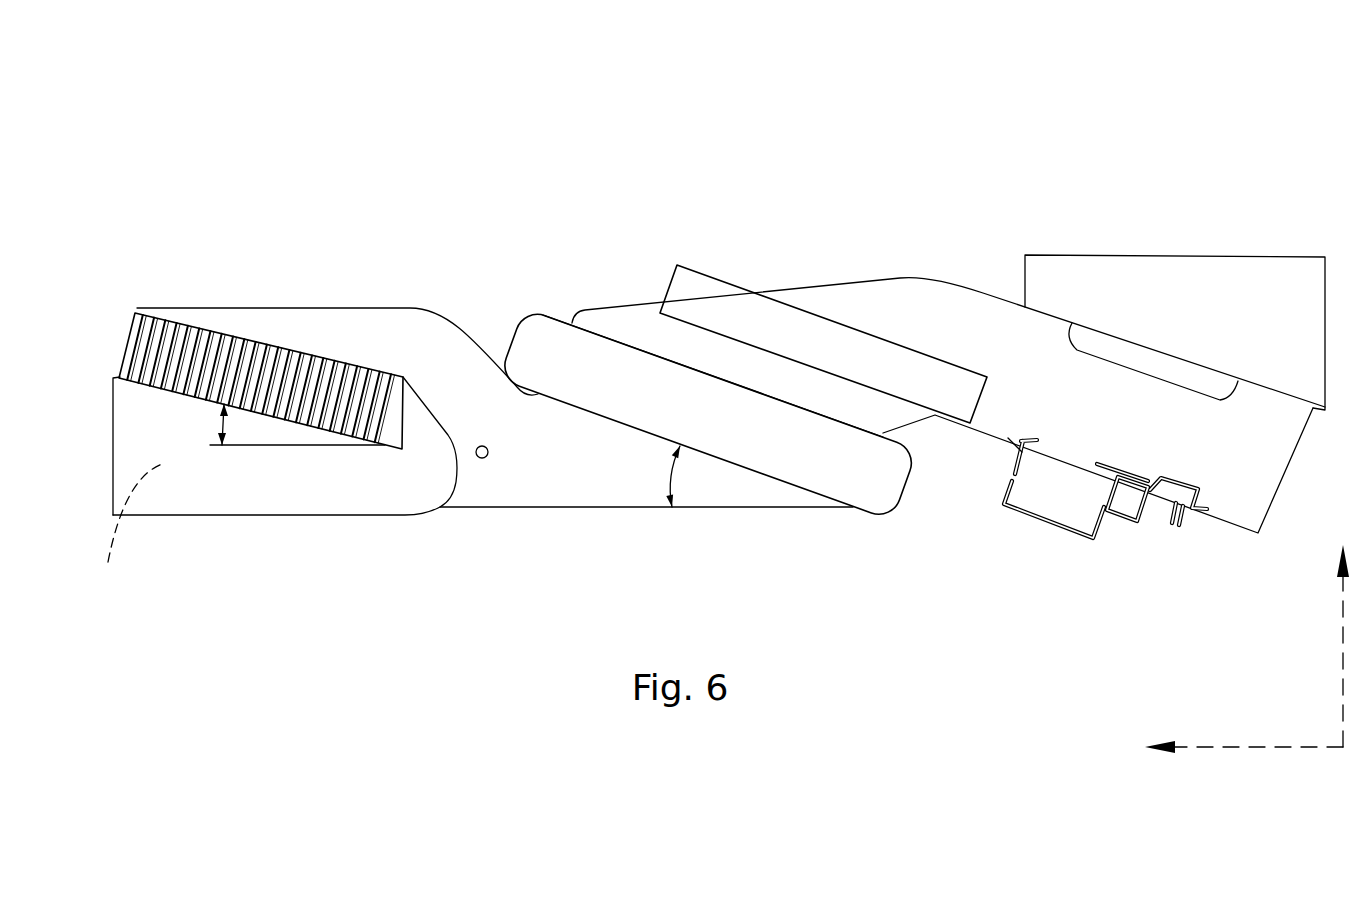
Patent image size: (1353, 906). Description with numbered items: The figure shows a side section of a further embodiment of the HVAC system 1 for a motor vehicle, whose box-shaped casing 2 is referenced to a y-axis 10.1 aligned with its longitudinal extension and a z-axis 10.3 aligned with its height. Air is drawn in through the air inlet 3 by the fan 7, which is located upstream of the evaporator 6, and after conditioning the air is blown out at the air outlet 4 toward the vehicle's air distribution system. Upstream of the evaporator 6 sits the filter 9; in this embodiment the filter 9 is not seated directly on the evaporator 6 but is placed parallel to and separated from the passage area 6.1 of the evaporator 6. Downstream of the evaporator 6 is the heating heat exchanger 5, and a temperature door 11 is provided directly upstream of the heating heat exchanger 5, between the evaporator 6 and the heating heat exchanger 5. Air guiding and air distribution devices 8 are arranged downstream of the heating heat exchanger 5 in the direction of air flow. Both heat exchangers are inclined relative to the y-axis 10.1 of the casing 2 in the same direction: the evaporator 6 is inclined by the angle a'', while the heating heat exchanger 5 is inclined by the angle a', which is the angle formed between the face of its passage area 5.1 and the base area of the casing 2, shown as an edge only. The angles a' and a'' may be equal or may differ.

The HVAC system 1 is at (388, 157).
The casing 2 is at (583, 507).
The air inlet 3 is at (1070, 292).
The air outlet 4 is at (112, 433).
The heating heat exchanger 5 is at (373, 390).
The passage area 5.1 is at (227, 337).
The evaporator 6 is at (542, 340).
The passage area 6.1 is at (637, 347).
The fan 7 is at (1088, 418).
The air guiding and air distribution devices 8 is at (130, 530).
The filter 9 is at (767, 322).
The y-axis 10.1 is at (1252, 745).
The z-axis 10.3 is at (1343, 617).
The temperature door 11 is at (457, 477).
The angle a' is at (283, 500).
The angle a'' is at (647, 521).